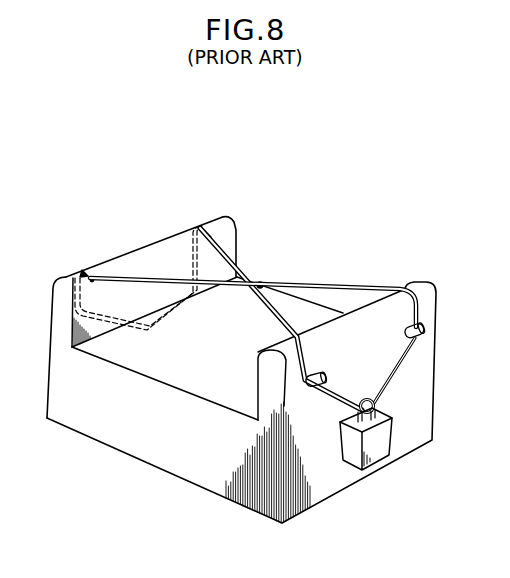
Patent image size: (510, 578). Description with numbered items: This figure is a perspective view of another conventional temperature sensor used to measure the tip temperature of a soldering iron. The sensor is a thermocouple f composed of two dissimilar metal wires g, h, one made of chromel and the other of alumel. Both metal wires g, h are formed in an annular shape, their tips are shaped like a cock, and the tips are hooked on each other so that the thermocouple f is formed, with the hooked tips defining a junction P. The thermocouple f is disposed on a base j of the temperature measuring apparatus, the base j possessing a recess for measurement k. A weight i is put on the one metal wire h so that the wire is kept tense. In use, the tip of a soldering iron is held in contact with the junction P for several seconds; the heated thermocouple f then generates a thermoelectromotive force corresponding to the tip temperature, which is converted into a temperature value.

The base j is at (95, 420).
The recess for measurement k is at (113, 352).
The metal wire g is at (233, 225).
The thermocouple f is at (264, 304).
The junction P is at (261, 283).
The metal wire h is at (358, 283).
The weight i is at (377, 443).